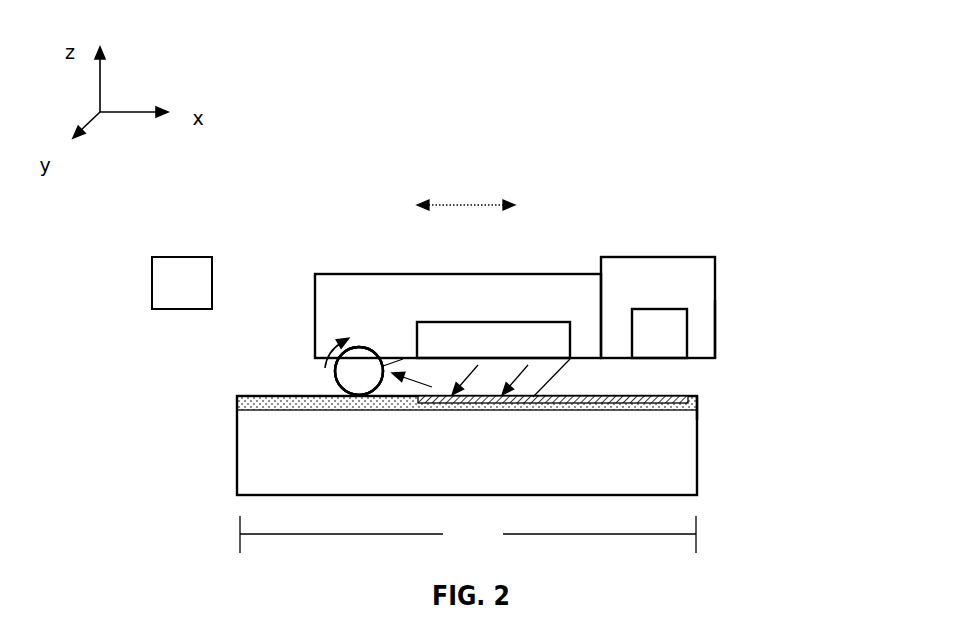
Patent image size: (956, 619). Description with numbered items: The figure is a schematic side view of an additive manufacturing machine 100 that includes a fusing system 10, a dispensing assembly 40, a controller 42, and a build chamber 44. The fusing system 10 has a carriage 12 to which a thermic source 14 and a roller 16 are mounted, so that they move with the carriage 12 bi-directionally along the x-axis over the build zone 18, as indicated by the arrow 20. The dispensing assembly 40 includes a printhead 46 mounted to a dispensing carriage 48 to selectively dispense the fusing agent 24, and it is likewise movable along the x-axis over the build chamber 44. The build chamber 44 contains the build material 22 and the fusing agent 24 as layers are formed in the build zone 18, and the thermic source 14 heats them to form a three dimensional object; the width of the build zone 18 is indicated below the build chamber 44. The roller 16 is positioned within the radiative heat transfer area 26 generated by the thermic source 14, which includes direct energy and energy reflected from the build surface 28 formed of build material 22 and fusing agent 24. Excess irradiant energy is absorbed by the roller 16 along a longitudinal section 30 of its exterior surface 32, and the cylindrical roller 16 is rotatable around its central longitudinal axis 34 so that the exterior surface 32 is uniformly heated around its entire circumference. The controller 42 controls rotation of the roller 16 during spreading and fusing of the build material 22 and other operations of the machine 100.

The additive manufacturing machine 100 is at (748, 121).
The fusing system 10 is at (318, 246).
The carriage 12 is at (315, 285).
The thermic source 14 is at (532, 322).
The roller 16 is at (318, 352).
The build zone 18 is at (468, 534).
The arrow 20 is at (463, 208).
The build material 22 is at (248, 402).
The fusing agent 24 is at (695, 408).
The radiative heat transfer area 26 is at (535, 371).
The build surface 28 is at (688, 396).
The longitudinal section 30 is at (385, 373).
The exterior surface 32 is at (352, 367).
The central longitudinal axis 34 is at (360, 377).
The dispensing assembly 40 is at (686, 235).
The controller 42 is at (170, 296).
The build chamber 44 is at (475, 474).
The printhead 46 is at (687, 327).
The dispensing carriage 48 is at (715, 340).